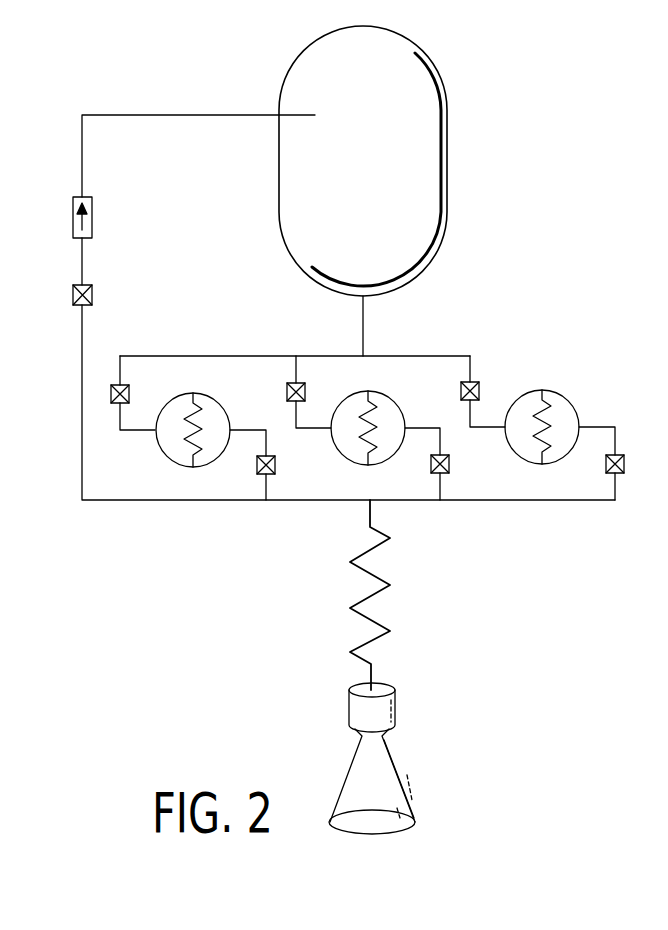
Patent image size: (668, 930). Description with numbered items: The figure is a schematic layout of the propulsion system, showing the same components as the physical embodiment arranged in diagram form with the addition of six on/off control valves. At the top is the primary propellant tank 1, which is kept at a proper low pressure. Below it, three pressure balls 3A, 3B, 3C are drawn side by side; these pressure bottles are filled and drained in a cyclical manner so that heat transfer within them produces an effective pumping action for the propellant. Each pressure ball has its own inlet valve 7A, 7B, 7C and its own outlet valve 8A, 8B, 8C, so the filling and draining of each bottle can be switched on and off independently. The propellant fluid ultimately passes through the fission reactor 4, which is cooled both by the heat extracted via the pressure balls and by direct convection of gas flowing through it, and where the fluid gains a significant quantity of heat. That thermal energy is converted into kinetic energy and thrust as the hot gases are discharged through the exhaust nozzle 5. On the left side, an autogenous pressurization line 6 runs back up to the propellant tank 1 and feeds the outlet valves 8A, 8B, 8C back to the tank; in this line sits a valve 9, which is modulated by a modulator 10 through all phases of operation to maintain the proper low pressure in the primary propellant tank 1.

The primary propellant tank 1 is at (430, 98).
The pressure ball 3A is at (221, 401).
The pressure ball 3B is at (396, 400).
The pressure ball 3C is at (570, 399).
The fission reactor 4 is at (376, 576).
The exhaust nozzle 5 is at (362, 778).
The pressurization line 6 is at (82, 440).
The inlet valve 7A is at (131, 393).
The inlet valve 7B is at (306, 392).
The inlet valve 7C is at (480, 391).
The outlet valve 8A is at (276, 466).
The outlet valve 8B is at (450, 465).
The outlet valve 8C is at (625, 465).
The valve 9 is at (73, 288).
The modulator 10 is at (73, 203).